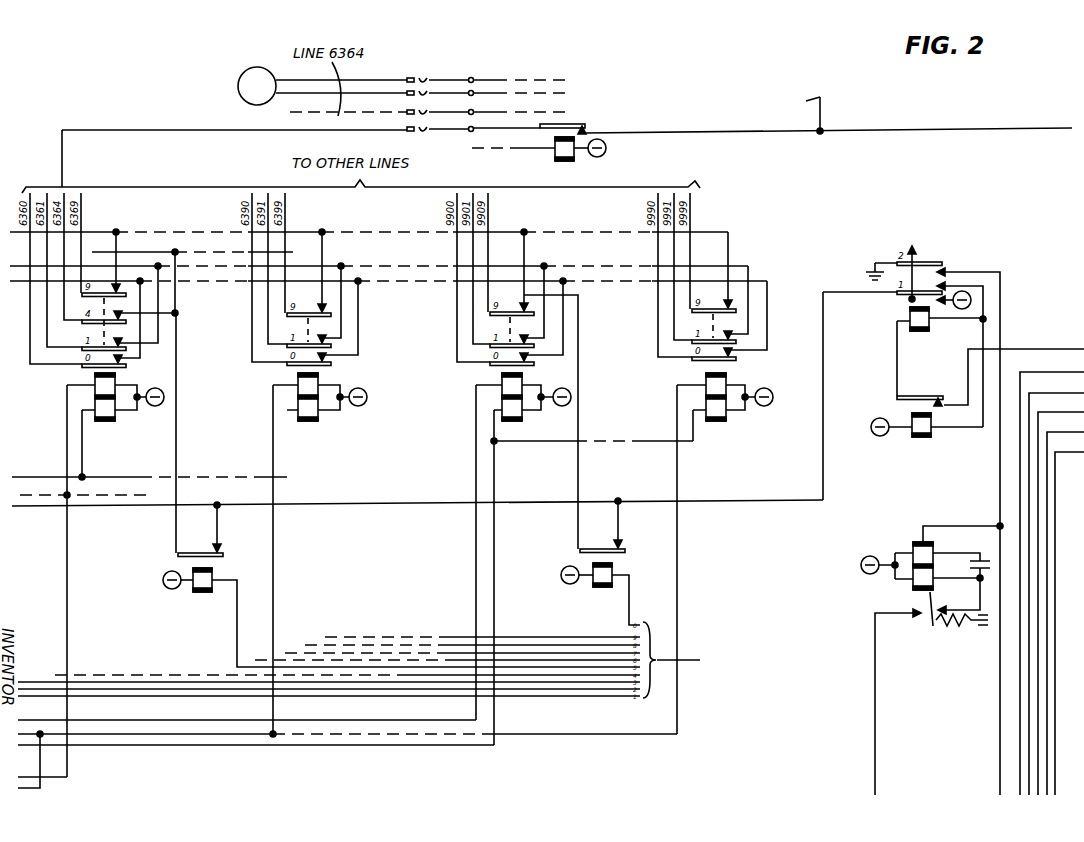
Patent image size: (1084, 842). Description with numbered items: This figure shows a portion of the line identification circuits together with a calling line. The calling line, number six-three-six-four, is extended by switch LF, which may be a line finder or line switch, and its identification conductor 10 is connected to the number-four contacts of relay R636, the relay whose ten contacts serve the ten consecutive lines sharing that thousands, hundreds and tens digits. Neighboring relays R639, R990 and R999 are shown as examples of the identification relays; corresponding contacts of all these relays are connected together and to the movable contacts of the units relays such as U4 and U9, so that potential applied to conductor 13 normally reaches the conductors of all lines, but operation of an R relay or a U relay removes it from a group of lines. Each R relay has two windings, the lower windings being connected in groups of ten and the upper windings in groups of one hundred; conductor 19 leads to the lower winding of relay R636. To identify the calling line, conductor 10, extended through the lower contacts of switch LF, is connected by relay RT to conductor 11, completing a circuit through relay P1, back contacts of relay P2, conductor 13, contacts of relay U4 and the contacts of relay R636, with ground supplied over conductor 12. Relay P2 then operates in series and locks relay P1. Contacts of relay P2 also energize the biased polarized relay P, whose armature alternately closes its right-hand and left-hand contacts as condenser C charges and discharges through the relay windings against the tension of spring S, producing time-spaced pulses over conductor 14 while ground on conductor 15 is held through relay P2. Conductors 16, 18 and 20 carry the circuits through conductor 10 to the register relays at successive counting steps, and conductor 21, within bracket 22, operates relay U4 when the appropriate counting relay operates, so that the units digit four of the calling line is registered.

The conductor 10 is at (155, 131).
The conductor 11 is at (927, 131).
The conductor 12 is at (1032, 353).
The conductor 13 is at (733, 502).
The conductor 14 is at (875, 733).
The conductor 15 is at (999, 733).
The conductor 16 is at (1035, 376).
The conductor 18 is at (1040, 397).
The conductor 19 is at (288, 461).
The conductor 20 is at (1055, 636).
The conductor 21 is at (236, 638).
The bracket 22 is at (697, 662).
The switch LF is at (496, 94).
The relay RT is at (556, 155).
The relay R636 is at (115, 416).
The relay R639 is at (318, 416).
The relay R990 is at (522, 416).
The relay R999 is at (726, 416).
The relay U4 is at (201, 592).
The relay U9 is at (602, 587).
The relay P1 is at (931, 436).
The relay P2 is at (929, 326).
The biased polarized relay P is at (916, 591).
The condenser C is at (985, 556).
The spring S is at (952, 630).